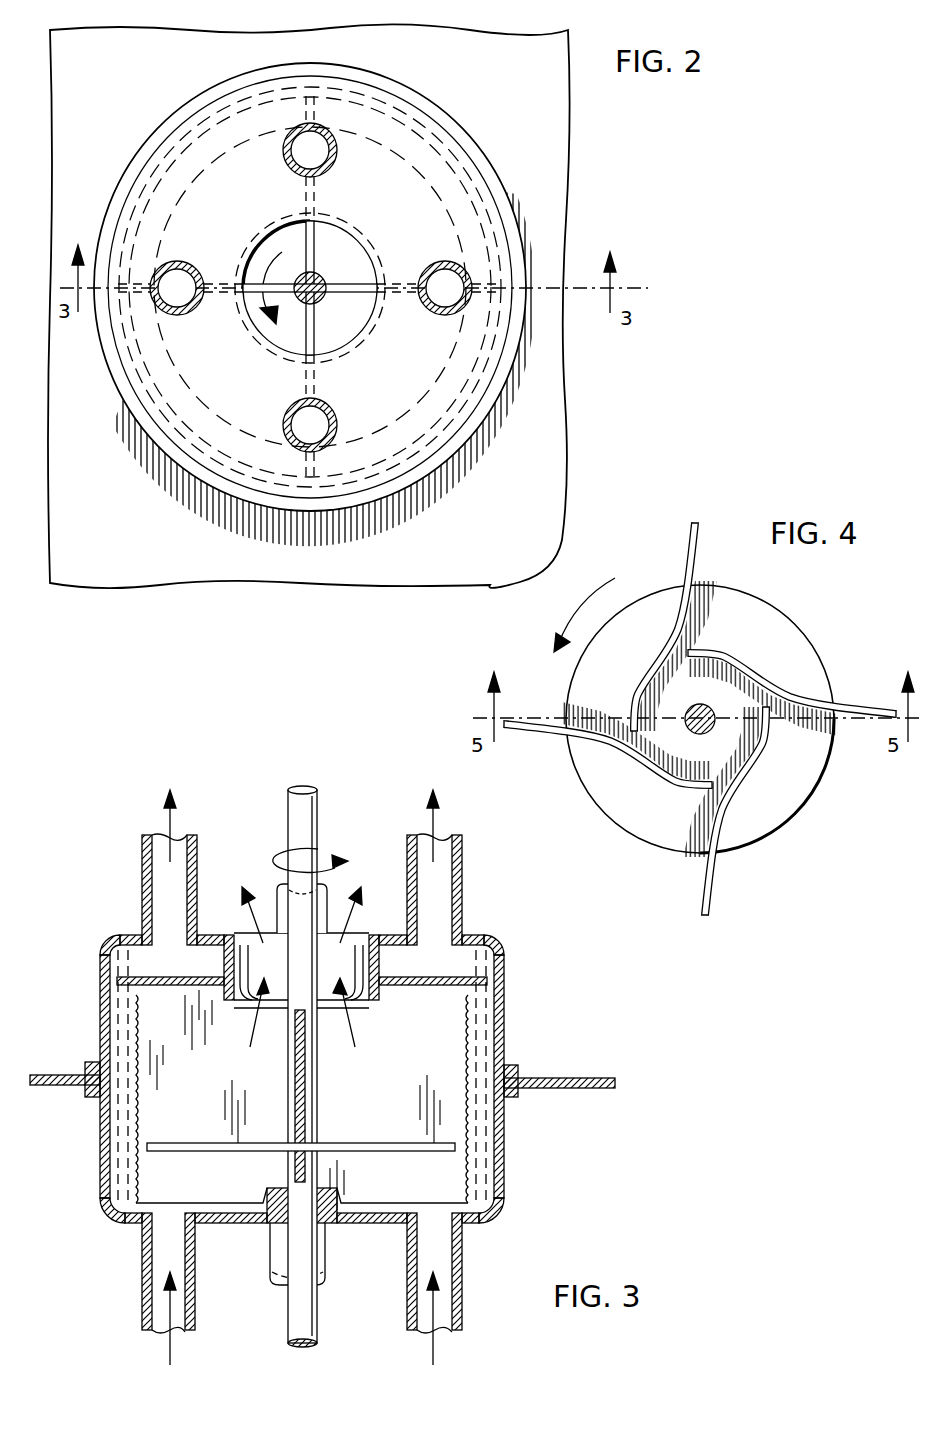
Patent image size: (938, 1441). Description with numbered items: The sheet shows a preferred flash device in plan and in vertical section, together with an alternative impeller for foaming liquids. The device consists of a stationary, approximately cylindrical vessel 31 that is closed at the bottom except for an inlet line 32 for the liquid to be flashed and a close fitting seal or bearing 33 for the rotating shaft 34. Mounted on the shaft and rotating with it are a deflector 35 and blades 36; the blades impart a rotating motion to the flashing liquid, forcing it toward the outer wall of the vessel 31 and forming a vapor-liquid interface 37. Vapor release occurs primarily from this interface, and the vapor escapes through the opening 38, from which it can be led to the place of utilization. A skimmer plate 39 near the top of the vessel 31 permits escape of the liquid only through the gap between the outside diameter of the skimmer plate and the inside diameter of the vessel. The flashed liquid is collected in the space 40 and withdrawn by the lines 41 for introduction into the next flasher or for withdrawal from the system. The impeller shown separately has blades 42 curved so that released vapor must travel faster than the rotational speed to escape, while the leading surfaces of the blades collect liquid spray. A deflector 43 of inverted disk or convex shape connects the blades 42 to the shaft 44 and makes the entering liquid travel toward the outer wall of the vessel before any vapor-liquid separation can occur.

In FIG. 2, the vessel 31 is at (427, 117).
In FIG. 3, the vessel 31 is at (505, 1007).
In FIG. 3, the inlet line 32 is at (140, 1288).
In FIG. 3, the seal or bearing 33 is at (273, 1222).
In FIG. 2, the rotating shaft 34 is at (308, 283).
In FIG. 3, the rotating shaft 34 is at (320, 823).
In FIG. 2, the deflector 35 is at (150, 428).
In FIG. 3, the deflector 35 is at (188, 1142).
In FIG. 2, the blades 36 is at (302, 240).
In FIG. 3, the blades 36 is at (100, 1007).
In FIG. 3, the vapor-liquid interface 37 is at (480, 1147).
In FIG. 2, the opening 38 is at (330, 327).
In FIG. 3, the opening 38 is at (343, 940).
In FIG. 2, the skimmer plate 39 is at (175, 120).
In FIG. 3, the skimmer plate 39 is at (467, 977).
In FIG. 3, the space 40 is at (118, 962).
In FIG. 2, the line 41 is at (340, 168).
In FIG. 3, the line 41 is at (142, 868).
In FIG. 4, the blades 42 is at (692, 532).
In FIG. 4, the deflector 43 is at (737, 598).
In FIG. 4, the shaft 44 is at (698, 704).